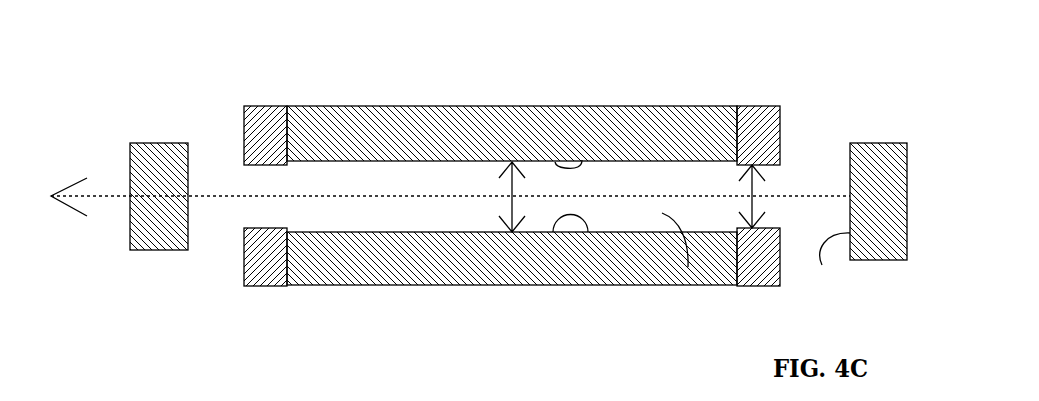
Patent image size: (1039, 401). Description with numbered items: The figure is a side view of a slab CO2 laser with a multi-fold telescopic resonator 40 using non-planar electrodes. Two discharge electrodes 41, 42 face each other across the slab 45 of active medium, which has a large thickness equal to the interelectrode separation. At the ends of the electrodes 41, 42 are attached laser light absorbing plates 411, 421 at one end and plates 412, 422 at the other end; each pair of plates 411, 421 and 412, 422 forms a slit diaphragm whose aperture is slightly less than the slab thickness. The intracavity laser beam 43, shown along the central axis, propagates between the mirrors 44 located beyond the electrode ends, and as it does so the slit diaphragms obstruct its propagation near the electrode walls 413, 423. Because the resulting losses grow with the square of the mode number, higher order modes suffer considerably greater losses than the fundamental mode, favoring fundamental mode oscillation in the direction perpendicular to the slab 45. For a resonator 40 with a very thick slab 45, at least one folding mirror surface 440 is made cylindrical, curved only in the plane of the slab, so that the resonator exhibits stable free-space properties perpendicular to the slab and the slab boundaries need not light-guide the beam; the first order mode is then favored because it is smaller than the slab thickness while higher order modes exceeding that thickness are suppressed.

The multi-fold telescopic resonator 40 is at (113, 89).
The electrode 41 is at (360, 258).
The plate 411 is at (263, 268).
The plate 412 is at (763, 257).
The electrode wall 413 is at (552, 232).
The electrode 42 is at (360, 125).
The plate 421 is at (266, 123).
The plate 422 is at (763, 123).
The electrode wall 423 is at (582, 160).
The intracavity laser beam 43 is at (803, 196).
The mirror 44 is at (145, 223).
The folding mirror surface 440 is at (822, 265).
The slab 45 is at (688, 267).